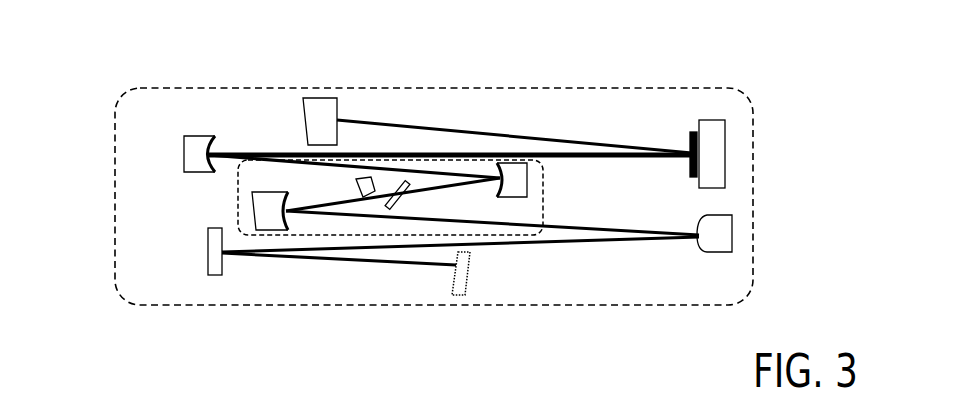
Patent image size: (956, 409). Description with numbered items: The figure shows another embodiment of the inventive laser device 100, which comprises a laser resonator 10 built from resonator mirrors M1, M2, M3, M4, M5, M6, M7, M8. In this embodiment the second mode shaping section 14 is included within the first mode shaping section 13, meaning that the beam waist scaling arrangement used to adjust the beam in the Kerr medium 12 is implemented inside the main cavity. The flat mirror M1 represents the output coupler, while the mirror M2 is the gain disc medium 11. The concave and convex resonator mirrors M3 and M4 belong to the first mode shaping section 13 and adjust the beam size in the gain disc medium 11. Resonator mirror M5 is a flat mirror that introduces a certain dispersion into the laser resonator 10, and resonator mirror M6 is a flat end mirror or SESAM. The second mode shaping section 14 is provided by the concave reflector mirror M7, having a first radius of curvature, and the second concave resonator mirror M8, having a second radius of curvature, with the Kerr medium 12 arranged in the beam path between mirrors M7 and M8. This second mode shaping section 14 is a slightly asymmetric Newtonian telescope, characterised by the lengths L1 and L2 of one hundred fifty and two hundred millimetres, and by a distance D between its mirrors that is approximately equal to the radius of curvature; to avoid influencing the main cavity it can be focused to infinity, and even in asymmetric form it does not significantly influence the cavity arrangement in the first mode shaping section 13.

The laser device 100 is at (132, 70).
The laser resonator 10 is at (203, 217).
The gain disc medium 11 is at (700, 153).
The Kerr medium 12 is at (407, 200).
The first mode shaping section 13 is at (750, 113).
The second mode shaping section 14 is at (545, 213).
The distance between the mirrors D is at (368, 187).
The first telescope length L1 is at (383, 158).
The second telescope length L2 is at (400, 220).
The flat mirror M1 is at (299, 121).
The mirror M2 is at (689, 146).
The concave resonator mirror M3 is at (181, 154).
The convex resonator mirror M4 is at (716, 250).
The resonator mirror M5 is at (197, 251).
The resonator mirror M6 is at (481, 273).
The concave reflector mirror M7 is at (513, 193).
The second concave resonator mirror M8 is at (269, 200).